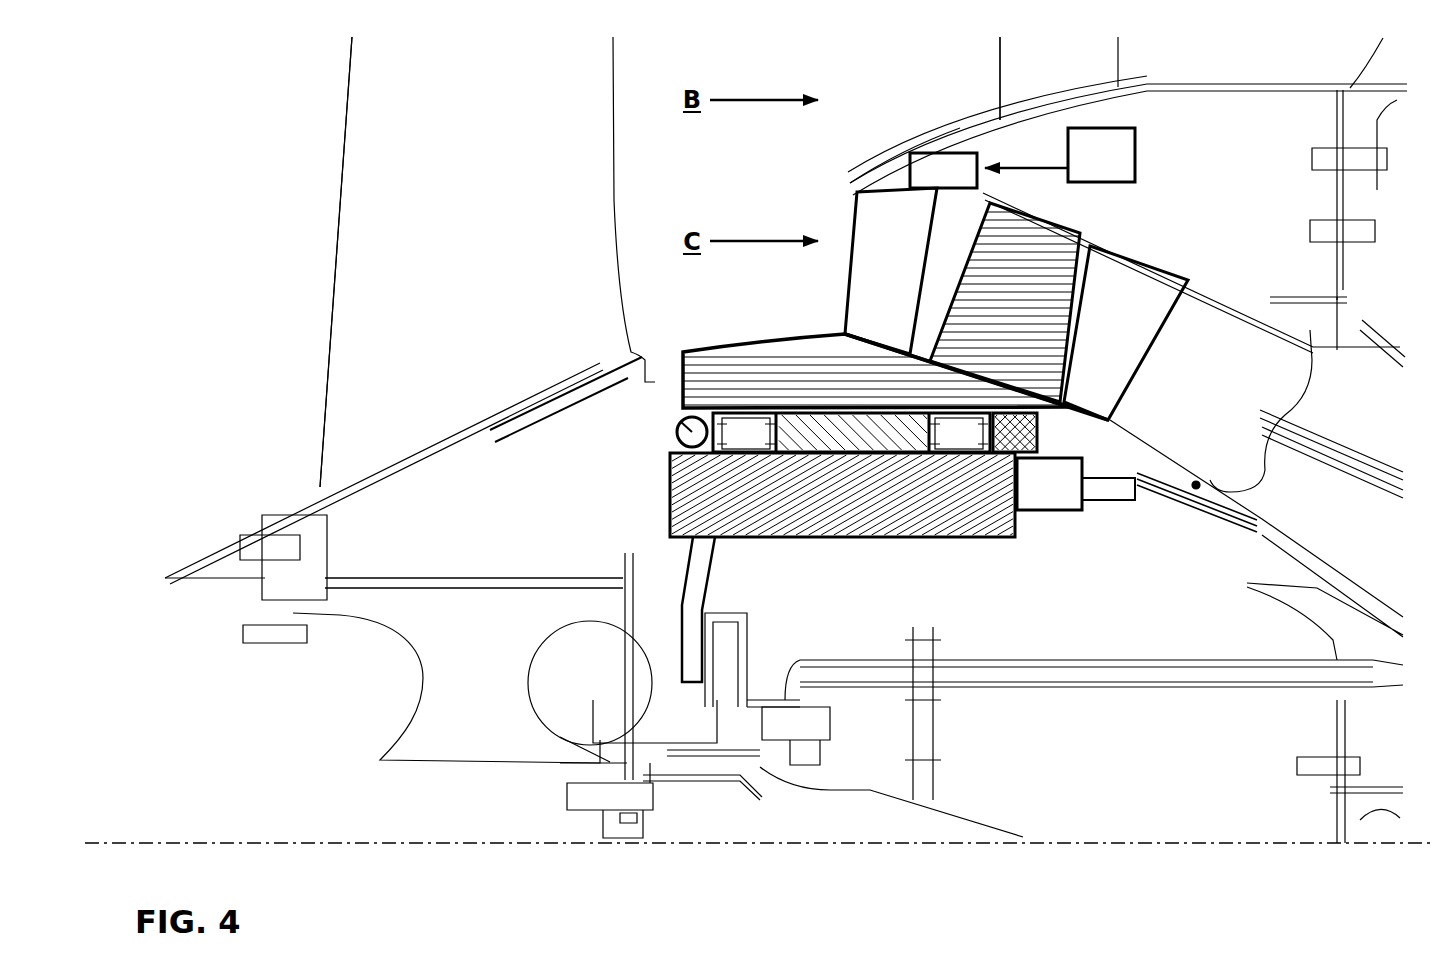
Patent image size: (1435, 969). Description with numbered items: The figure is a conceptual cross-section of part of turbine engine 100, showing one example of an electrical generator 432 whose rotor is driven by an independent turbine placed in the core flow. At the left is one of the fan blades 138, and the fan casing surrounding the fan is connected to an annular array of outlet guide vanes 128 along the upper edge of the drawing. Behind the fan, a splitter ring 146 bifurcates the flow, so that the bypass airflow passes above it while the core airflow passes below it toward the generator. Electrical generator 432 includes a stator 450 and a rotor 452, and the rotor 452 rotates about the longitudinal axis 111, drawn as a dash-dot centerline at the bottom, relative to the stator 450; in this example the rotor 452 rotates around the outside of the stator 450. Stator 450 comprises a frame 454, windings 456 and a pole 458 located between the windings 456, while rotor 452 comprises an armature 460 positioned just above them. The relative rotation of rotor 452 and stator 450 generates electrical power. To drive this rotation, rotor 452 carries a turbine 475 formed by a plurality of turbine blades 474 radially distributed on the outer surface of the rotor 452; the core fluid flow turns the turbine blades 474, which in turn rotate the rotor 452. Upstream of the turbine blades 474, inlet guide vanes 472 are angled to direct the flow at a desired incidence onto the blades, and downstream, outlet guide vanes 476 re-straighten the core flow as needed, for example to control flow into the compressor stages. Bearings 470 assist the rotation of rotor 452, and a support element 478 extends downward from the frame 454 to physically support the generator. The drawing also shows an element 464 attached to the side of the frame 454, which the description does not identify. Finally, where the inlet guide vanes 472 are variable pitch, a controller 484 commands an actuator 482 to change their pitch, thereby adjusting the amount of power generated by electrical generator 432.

The turbine engine 100 is at (193, 60).
The longitudinal axis 111 is at (87, 843).
The outlet guide vanes 128 is at (1015, 85).
The fan blades 138 is at (356, 266).
The splitter ring 146 is at (856, 190).
The electrical generator 432 is at (632, 491).
The stator 450 is at (868, 547).
The rotor 452 is at (955, 298).
The frame 454 is at (817, 507).
The windings 456 is at (729, 445).
The pole 458 is at (836, 445).
The armature 460 is at (829, 397).
The connector 464 is at (1040, 500).
The bearings 470 is at (677, 425).
The inlet guide vanes 472 is at (860, 305).
The turbine blades 474 is at (1040, 232).
The turbine 475 is at (1009, 298).
The outlet guide vanes 476 is at (1160, 285).
The support element 478 is at (705, 555).
The actuator 482 is at (925, 184).
The controller 484 is at (1083, 166).